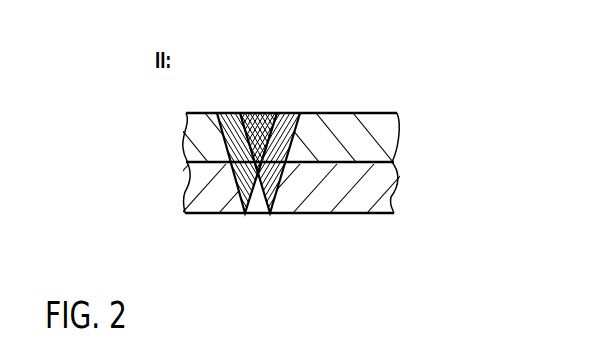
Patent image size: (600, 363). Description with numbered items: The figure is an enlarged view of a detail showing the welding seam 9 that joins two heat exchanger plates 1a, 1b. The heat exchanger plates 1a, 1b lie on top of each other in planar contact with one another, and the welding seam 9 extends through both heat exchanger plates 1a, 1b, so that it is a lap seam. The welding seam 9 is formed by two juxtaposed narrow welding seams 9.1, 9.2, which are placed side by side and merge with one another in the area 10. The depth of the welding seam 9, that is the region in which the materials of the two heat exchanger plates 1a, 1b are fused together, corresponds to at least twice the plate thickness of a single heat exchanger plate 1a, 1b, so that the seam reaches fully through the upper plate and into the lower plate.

The heat exchanger plate 1a is at (385, 133).
The heat exchanger plate 1b is at (397, 186).
The welding seam 9 is at (257, 153).
The narrow welding seam 9.1 is at (238, 188).
The narrow welding seam 9.2 is at (280, 170).
The area 10 is at (270, 113).